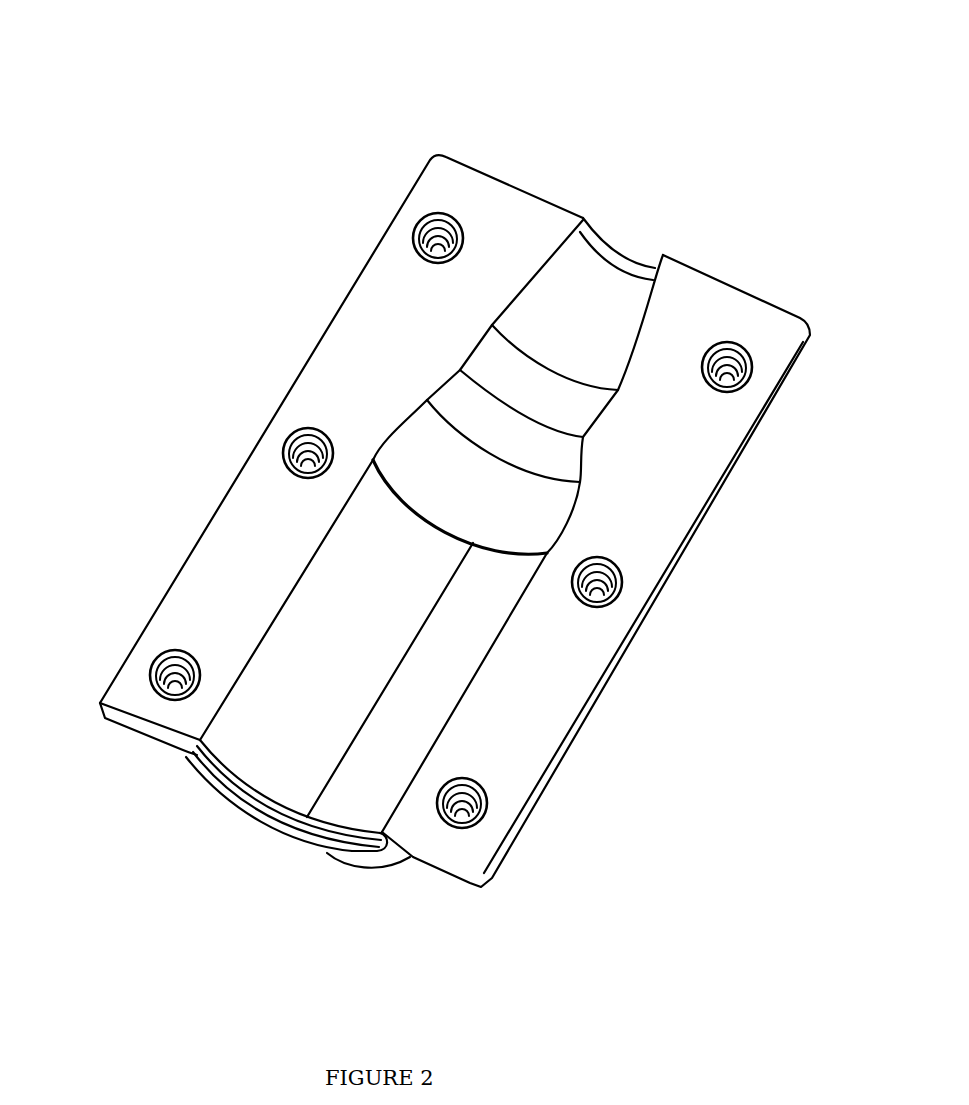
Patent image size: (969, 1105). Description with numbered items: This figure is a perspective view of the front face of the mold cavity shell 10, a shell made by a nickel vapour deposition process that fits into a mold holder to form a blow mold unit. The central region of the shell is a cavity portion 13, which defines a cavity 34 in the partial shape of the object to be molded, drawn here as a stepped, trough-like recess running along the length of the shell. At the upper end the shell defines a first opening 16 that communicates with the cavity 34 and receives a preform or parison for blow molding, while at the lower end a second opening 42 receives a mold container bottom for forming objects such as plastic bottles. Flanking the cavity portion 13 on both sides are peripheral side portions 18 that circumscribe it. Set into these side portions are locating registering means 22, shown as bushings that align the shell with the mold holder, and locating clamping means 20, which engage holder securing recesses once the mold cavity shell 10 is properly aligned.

The mold cavity shell 10 is at (497, 148).
The cavity portion 13 is at (282, 838).
The first opening 16 is at (620, 247).
The peripheral side portions 18 is at (376, 295).
The locating clamping means 20 is at (425, 225).
The locating registering means 22 is at (158, 657).
The cavity 34 is at (290, 748).
The second opening 42 is at (331, 843).